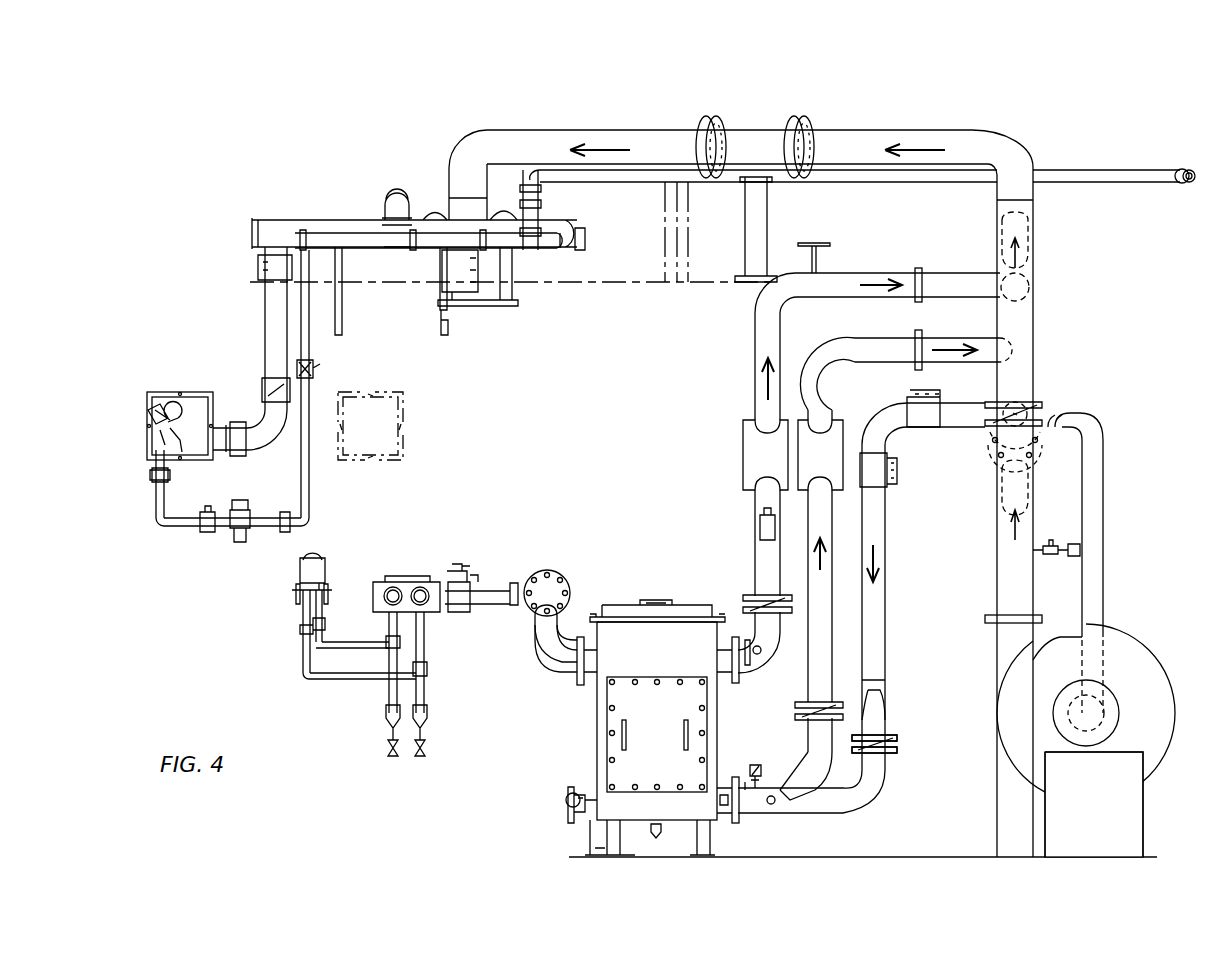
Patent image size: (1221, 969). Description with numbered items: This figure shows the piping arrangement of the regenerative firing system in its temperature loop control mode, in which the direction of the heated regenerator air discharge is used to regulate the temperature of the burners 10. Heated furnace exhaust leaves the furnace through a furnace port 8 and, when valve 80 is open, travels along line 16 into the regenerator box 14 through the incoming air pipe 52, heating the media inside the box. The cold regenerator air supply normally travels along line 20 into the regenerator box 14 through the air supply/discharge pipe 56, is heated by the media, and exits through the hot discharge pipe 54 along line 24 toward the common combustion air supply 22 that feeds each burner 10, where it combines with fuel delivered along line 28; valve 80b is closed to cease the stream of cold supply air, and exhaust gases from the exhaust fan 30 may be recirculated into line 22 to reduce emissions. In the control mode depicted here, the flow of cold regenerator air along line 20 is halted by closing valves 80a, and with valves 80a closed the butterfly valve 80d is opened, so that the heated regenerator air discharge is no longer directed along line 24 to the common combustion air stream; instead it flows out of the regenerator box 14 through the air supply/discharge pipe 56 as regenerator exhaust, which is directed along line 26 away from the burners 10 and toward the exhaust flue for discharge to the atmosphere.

The furnace port 8 is at (537, 632).
The burner 10 is at (172, 392).
The regenerator box 14 is at (670, 645).
The heated furnace exhaust line 16 is at (563, 642).
The cold regenerator air supply line 20 is at (1103, 440).
The common combustion air supply line 22 is at (612, 168).
The heated regenerator air discharge line 24 is at (860, 273).
The regenerator exhaust line 26 is at (883, 338).
The fuel supply line 28 is at (650, 180).
The exhaust fan 30 is at (1105, 795).
The incoming air pipe 52 is at (590, 668).
The hot discharge pipe 54 is at (738, 670).
The air supply/discharge pipe 56 is at (737, 815).
The valve 80 is at (535, 571).
The valve 80a is at (892, 742).
The valve 80b is at (745, 599).
The butterfly valve 80d is at (798, 710).